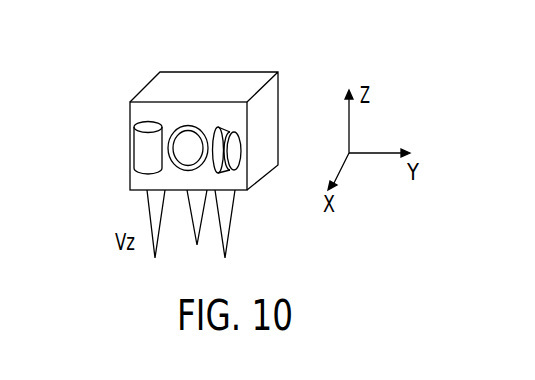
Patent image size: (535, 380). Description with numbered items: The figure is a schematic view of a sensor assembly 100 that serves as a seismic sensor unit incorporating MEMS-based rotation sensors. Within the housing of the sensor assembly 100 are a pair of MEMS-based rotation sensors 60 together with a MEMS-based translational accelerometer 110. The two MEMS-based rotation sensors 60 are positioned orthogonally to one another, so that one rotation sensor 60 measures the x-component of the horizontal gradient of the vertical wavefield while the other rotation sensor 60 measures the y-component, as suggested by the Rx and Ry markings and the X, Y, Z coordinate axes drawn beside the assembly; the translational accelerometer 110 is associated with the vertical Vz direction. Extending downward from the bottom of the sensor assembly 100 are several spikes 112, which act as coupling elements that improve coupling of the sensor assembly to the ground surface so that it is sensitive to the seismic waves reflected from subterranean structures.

The sensor assembly 100 is at (119, 116).
The MEMS-based translational accelerometer 110 is at (150, 174).
The MEMS-based rotation sensor 60 is at (285, 170).
The spike 112 is at (230, 227).